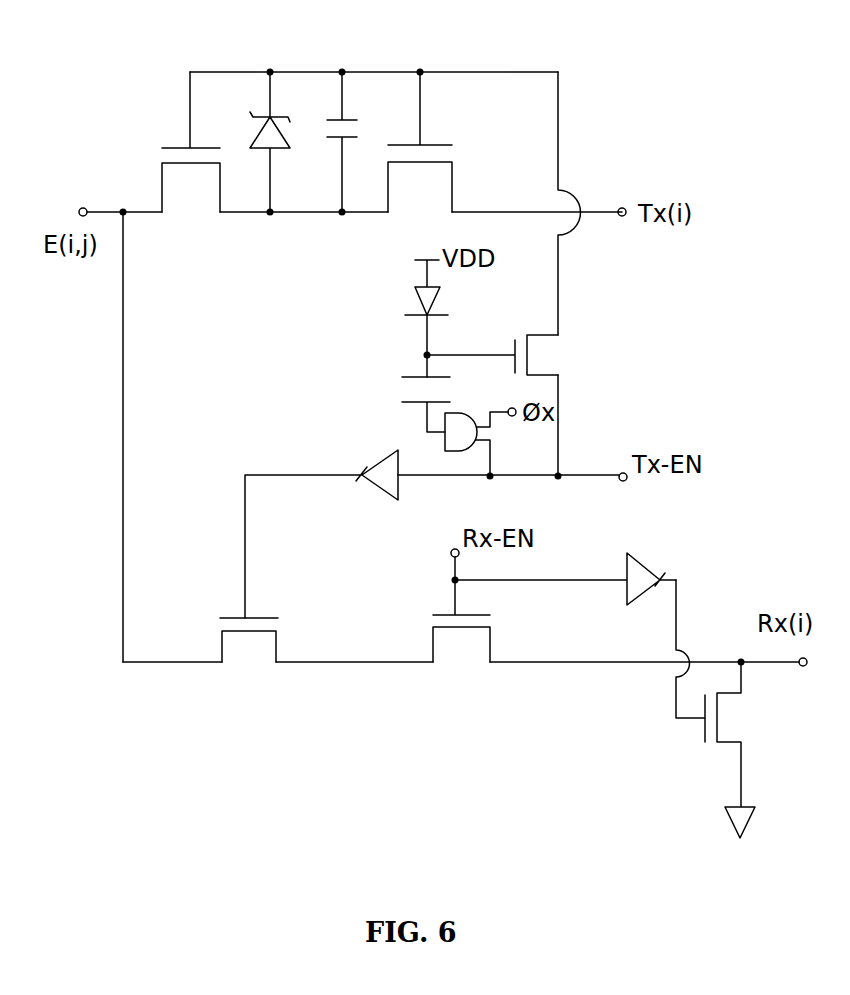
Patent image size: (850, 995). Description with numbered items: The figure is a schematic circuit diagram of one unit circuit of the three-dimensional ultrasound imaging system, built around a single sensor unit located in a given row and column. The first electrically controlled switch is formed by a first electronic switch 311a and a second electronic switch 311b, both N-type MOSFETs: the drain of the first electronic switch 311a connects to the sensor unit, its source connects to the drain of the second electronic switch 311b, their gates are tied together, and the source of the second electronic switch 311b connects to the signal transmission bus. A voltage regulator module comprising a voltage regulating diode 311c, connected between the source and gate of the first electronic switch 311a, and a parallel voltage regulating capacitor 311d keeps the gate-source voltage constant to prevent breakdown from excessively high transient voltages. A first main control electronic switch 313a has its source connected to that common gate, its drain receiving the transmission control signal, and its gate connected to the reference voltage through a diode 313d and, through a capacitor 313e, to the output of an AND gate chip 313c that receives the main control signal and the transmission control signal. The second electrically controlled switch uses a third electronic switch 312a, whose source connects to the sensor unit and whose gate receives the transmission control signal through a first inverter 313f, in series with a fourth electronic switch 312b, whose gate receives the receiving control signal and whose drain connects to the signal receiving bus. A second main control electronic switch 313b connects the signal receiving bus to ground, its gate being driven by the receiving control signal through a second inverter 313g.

The first electronic switch 311a is at (162, 192).
The second electronic switch 311b is at (452, 183).
The voltage regulating diode 311c is at (285, 117).
The voltage regulating capacitor 311d is at (350, 120).
The third electronic switch 312a is at (218, 648).
The fourth electronic switch 312b is at (430, 648).
The first main control electronic switch 313a is at (548, 333).
The second main control electronic switch 313b is at (700, 726).
The AND gate chip 313c is at (450, 450).
The diode 313d is at (412, 297).
The capacitor 313e is at (405, 378).
The first inverter 313f is at (385, 497).
The second inverter 313g is at (625, 572).